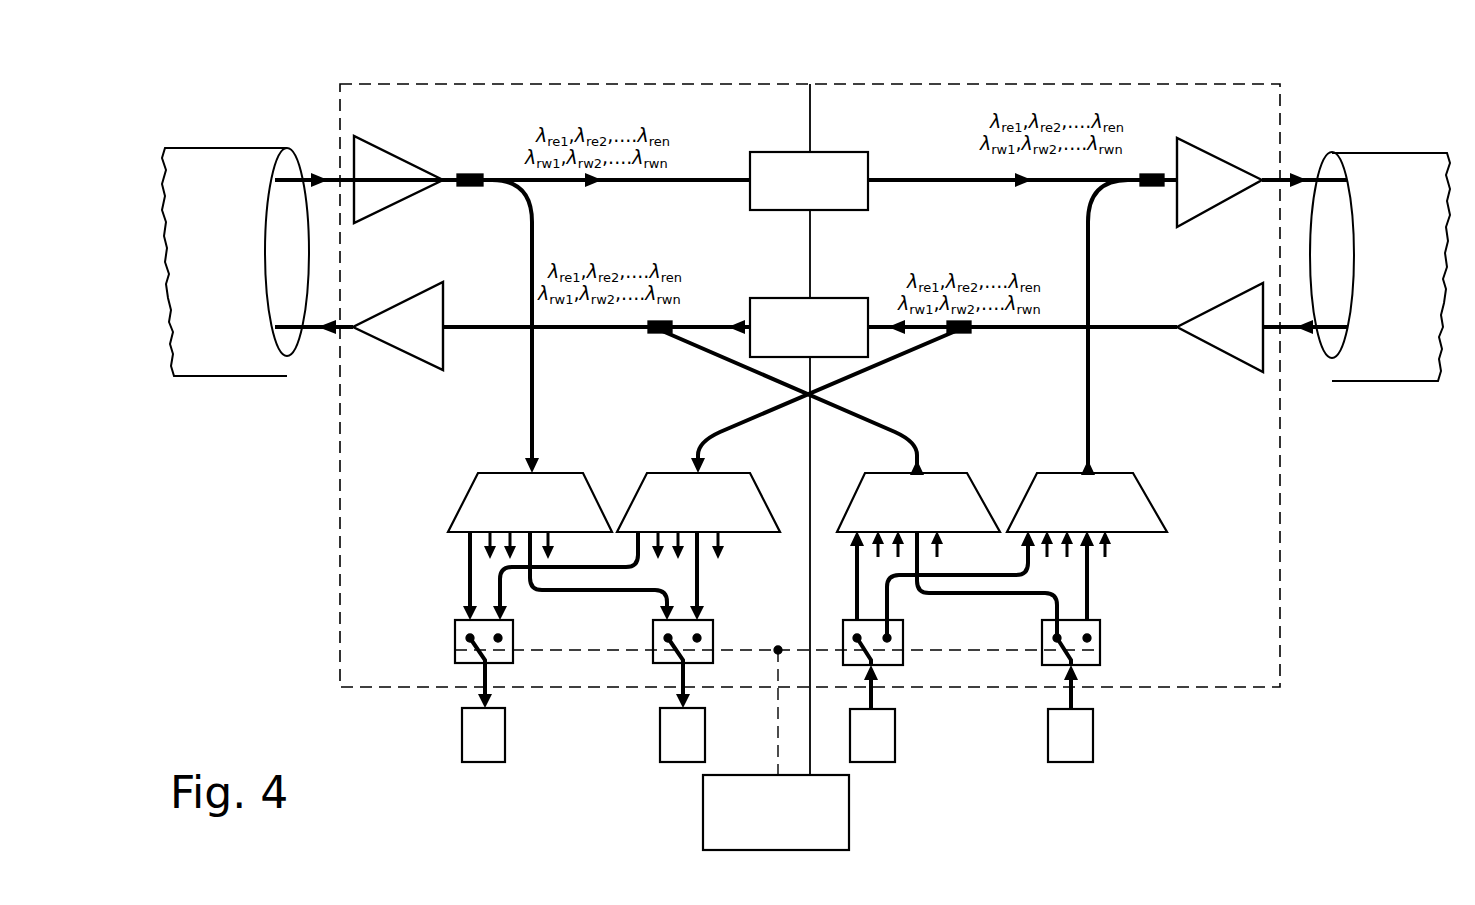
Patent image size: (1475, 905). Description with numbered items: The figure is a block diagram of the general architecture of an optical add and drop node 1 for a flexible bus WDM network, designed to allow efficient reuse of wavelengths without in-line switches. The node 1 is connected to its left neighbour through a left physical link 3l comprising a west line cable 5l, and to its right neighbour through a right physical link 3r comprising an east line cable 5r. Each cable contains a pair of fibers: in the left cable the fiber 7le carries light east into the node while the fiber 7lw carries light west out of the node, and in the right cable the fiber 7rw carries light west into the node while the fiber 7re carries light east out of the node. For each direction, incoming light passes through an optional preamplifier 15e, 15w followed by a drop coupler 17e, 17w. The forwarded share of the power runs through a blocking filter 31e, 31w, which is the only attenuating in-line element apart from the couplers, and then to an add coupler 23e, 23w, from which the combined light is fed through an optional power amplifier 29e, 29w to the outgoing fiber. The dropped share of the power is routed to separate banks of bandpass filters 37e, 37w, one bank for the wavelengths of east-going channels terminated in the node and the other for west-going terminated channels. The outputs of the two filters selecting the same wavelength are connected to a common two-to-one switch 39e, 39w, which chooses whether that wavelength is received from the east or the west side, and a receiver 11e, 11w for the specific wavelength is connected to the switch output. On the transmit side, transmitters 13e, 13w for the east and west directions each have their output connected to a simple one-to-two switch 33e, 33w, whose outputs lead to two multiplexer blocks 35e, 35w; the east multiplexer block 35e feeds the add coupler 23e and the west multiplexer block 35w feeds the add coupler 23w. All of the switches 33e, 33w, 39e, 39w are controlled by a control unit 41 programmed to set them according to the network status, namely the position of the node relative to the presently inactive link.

The add and drop node 1 is at (340, 487).
The left physical link 3l is at (238, 92).
The right physical link 3r is at (1388, 105).
The west line cable 5l is at (235, 357).
The east line cable 5r is at (1412, 360).
The left east-going optical fiber 7le is at (318, 178).
The left west-going optical fiber 7lw is at (310, 335).
The right east-going optical fiber 7re is at (1312, 178).
The right west-going optical fiber 7rw is at (1298, 332).
The east receiver 11e is at (505, 726).
The west receiver 11w is at (660, 733).
The east transmitter 13e is at (1048, 724).
The west transmitter 13w is at (895, 724).
The east preamplifier 15e is at (398, 169).
The west preamplifier 15w is at (1209, 348).
The east drop coupler 17e is at (470, 173).
The west drop coupler 17w is at (960, 336).
The east add coupler 23e is at (1152, 188).
The west add coupler 23w is at (666, 334).
The east power amplifier 29e is at (1216, 166).
The west power amplifier 29w is at (412, 352).
The east blocking filter 31e is at (860, 156).
The west blocking filter 31w is at (818, 298).
The east transmitter switch 33e is at (1100, 632).
The west transmitter switch 33w is at (903, 628).
The east multiplexer block 35e is at (1120, 473).
The west multiplexer block 35w is at (950, 473).
The east bandpass filter bank 37e is at (570, 490).
The west bandpass filter bank 37w is at (754, 495).
The east receiver switch 39e is at (713, 638).
The west receiver switch 39w is at (455, 638).
The control unit 41 is at (849, 798).